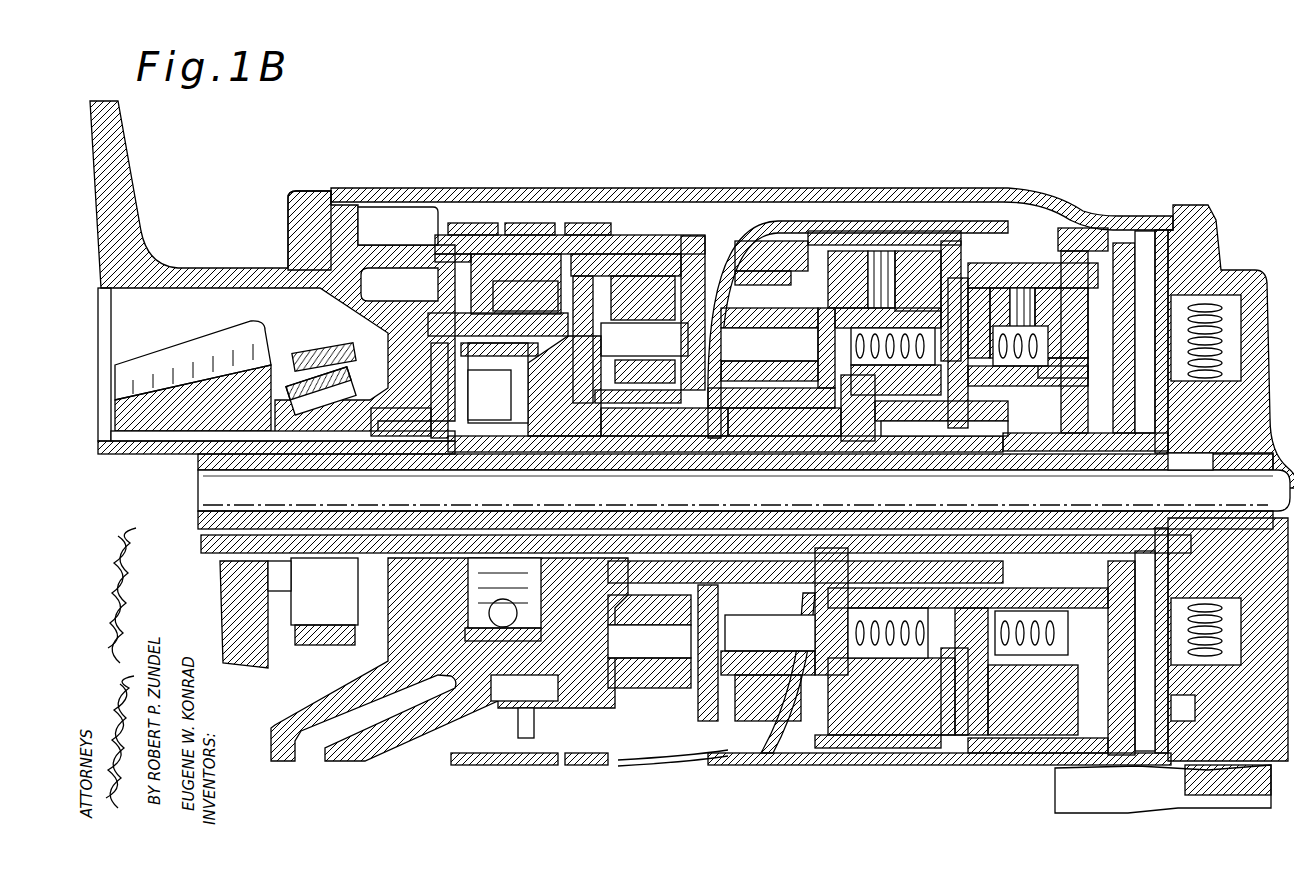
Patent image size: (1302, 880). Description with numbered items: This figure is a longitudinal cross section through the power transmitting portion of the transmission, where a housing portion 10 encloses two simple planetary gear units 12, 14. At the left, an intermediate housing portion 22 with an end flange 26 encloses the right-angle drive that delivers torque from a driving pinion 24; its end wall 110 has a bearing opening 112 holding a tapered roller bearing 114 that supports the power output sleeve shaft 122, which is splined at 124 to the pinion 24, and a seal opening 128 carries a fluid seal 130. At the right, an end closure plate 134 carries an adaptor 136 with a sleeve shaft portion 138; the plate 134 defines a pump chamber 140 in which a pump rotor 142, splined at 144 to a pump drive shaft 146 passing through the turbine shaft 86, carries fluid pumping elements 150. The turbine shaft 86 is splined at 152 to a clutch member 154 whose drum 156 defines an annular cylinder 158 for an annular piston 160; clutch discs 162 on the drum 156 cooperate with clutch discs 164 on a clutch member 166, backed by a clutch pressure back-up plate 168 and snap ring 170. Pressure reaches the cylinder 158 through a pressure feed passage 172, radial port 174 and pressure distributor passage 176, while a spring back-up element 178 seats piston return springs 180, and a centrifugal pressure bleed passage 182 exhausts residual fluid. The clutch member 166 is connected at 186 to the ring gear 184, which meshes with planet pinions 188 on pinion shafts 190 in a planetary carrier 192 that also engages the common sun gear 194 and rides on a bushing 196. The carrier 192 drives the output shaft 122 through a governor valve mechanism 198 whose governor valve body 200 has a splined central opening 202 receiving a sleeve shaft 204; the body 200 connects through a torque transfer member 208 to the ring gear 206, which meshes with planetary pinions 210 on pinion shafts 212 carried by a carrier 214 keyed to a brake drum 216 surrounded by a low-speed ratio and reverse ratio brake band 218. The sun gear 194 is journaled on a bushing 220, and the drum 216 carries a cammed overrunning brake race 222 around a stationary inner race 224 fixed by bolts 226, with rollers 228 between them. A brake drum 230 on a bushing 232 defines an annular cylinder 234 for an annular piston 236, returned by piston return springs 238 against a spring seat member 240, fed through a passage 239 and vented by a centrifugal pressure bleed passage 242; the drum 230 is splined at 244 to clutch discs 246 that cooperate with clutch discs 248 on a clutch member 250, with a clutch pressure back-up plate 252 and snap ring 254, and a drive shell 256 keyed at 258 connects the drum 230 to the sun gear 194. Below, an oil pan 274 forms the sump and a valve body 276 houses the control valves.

The housing portion 10 is at (762, 176).
The planetary gear unit 12 is at (600, 248).
The planetary gear unit 14 is at (757, 740).
The intermediate housing portion 22 is at (190, 260).
The driving pinion 24 is at (130, 365).
The end flange 26 is at (310, 183).
The turbine shaft 86 is at (185, 462).
The end wall 110 is at (325, 310).
The bearing opening 112 is at (305, 340).
The tapered roller bearing 114 is at (334, 345).
The power output sleeve shaft 122 is at (100, 445).
The spline 124 is at (165, 425).
The seal opening 128 is at (365, 598).
The fluid seal 130 is at (405, 445).
The end closure plate 134 is at (1211, 262).
The adaptor 136 is at (1165, 240).
The sleeve shaft portion 138 is at (1060, 412).
The pump chamber 140 is at (1258, 295).
The pump rotor 142 is at (1268, 330).
The spline 144 is at (1213, 445).
The pump drive shaft 146 is at (1228, 639).
The fluid pumping elements 150 is at (1232, 275).
The spline 152 is at (760, 560).
The clutch member 154 is at (850, 430).
The drum 156 is at (830, 262).
The annular cylinder 158 is at (934, 233).
The annular piston 160 is at (896, 272).
The clutch discs 162 is at (855, 275).
The clutch discs 164 is at (876, 270).
The clutch member 166 is at (847, 722).
The clutch pressure back-up plate 168 is at (822, 255).
The snap ring 170 is at (815, 232).
The pressure feed passage 172 is at (985, 418).
The radial port 174 is at (935, 430).
The pressure distributor passage 176 is at (890, 415).
The spring back-up element 178 is at (832, 737).
The piston return springs 180 is at (915, 735).
The centrifugal pressure bleed passage 182 is at (900, 262).
The ring gear 184 is at (728, 290).
The splines or keys 186 is at (740, 280).
The planet pinions 188 is at (738, 245).
The pinion shafts 190 is at (785, 250).
The planetary carrier 192 is at (825, 560).
The sun gear 194 is at (690, 560).
The bushing 196 is at (770, 440).
The governor valve mechanism 198 is at (512, 705).
The governor valve body 200 is at (565, 427).
The splined central opening 202 is at (512, 440).
The sleeve shaft 204 is at (640, 430).
The ring gear 206 is at (620, 235).
The torque transfer member 208 is at (583, 700).
The planetary pinions 210 is at (650, 340).
The pinion shafts 212 is at (660, 355).
The carrier 214 is at (690, 420).
The brake drum 216 is at (640, 300).
The low-speed ratio and reverse ratio brake band 218 is at (440, 235).
The bushing 220 is at (722, 425).
The cammed overrunning brake race 222 is at (465, 280).
The stationary inner race 224 is at (500, 300).
The bolts 226 is at (433, 260).
The rollers 228 is at (537, 282).
The brake drum 230 is at (1113, 300).
The bushing 232 is at (1018, 420).
The annular cylinder 234 is at (1120, 310).
The annular piston 236 is at (1102, 260).
The piston return springs 238 is at (1040, 705).
The passage 239 is at (1140, 386).
The spring seat member 240 is at (1112, 435).
The centrifugal pressure bleed passage 242 is at (952, 220).
The spline 244 is at (1005, 275).
The clutch discs 246 is at (1000, 250).
The clutch discs 248 is at (1030, 278).
The clutch member 250 is at (975, 730).
The clutch pressure back-up plate 252 is at (985, 740).
The snap ring 254 is at (962, 260).
The drive shell 256 is at (712, 745).
The splines or keys 258 is at (945, 715).
The oil pan 274 is at (1163, 789).
The valve body 276 is at (1090, 785).